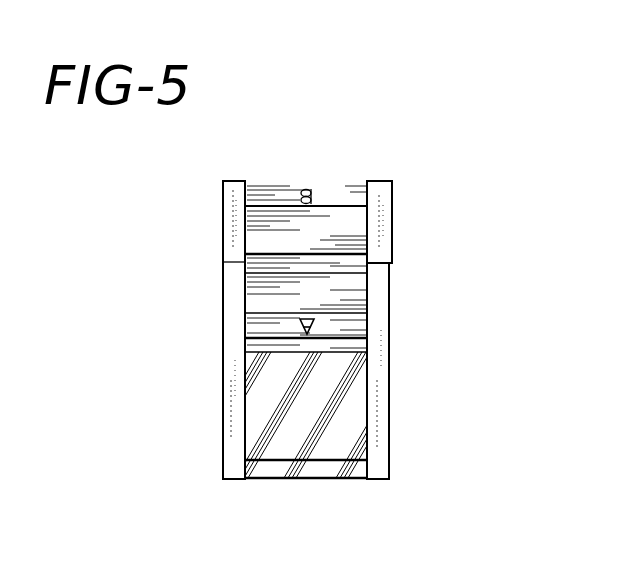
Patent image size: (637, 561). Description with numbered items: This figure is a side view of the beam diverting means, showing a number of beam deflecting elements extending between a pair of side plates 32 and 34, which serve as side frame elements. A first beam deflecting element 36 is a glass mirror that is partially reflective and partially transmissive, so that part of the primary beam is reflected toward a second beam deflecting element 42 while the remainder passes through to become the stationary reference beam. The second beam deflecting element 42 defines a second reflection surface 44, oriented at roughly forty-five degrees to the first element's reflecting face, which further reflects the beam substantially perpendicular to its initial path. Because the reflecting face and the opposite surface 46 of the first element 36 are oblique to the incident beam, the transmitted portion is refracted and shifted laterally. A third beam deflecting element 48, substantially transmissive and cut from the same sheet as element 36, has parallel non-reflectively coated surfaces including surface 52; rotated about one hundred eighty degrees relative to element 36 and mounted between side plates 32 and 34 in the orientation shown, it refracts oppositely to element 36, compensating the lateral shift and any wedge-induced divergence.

The side plate 32 is at (230, 323).
The side plate 34 is at (386, 305).
The first beam deflecting element 36 is at (362, 325).
The second beam deflecting element 42 is at (302, 468).
The second reflection surface 44 is at (257, 402).
The second reflection surface of the first element 46 is at (262, 290).
The third beam deflecting element 48 is at (335, 203).
The parallel surface 52 is at (340, 218).